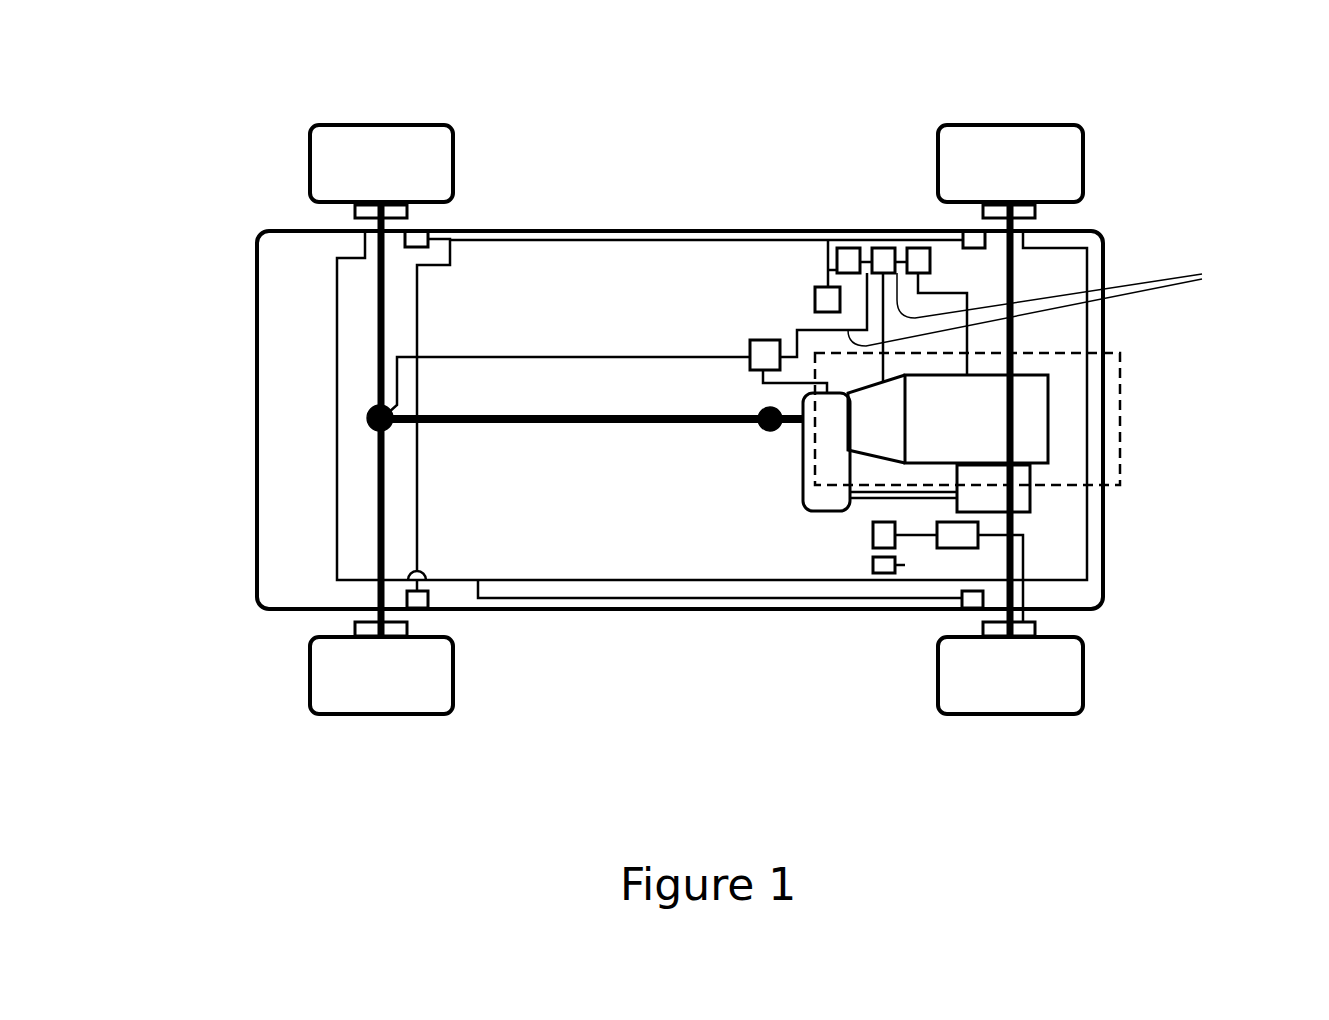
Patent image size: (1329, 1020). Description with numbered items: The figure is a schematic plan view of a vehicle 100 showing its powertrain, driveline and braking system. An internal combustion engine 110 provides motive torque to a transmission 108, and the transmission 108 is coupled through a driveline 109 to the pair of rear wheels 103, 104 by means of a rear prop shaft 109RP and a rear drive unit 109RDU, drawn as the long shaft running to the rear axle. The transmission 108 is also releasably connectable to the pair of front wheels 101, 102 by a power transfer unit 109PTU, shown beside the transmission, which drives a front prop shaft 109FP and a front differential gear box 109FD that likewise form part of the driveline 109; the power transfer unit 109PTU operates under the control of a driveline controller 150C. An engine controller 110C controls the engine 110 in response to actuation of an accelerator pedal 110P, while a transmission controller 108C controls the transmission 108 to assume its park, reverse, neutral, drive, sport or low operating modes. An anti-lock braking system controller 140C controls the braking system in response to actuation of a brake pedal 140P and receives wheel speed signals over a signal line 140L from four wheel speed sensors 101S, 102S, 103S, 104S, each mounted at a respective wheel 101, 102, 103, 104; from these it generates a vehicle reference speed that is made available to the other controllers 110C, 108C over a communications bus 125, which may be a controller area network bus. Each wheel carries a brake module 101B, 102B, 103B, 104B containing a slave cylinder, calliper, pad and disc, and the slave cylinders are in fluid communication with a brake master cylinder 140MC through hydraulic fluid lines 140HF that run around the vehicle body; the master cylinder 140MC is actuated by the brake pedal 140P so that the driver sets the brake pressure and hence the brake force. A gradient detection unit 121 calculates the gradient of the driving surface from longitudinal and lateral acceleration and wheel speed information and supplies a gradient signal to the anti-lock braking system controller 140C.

The vehicle 100 is at (1202, 128).
The front wheel 101 is at (1068, 172).
The front wheel 102 is at (1068, 688).
The rear wheel 103 is at (320, 172).
The rear wheel 104 is at (315, 680).
The brake module 101B is at (1035, 210).
The brake module 102B is at (1035, 630).
The brake module 103B is at (355, 210).
The brake module 104B is at (355, 630).
The wheel speed sensor 101S is at (973, 240).
The wheel speed sensor 102S is at (973, 608).
The wheel speed sensor 103S is at (418, 239).
The wheel speed sensor 104S is at (428, 600).
The transmission 108 is at (862, 398).
The transmission controller 108C is at (883, 248).
The driveline 109 is at (316, 446).
The rear drive unit 109RDU is at (372, 410).
The rear prop shaft 109RP is at (625, 421).
The power transfer unit 109PTU is at (812, 505).
The front differential gear box 109FD is at (1030, 503).
The front prop shaft 109FP is at (928, 499).
The internal combustion engine 110 is at (1018, 412).
The engine controller 110C is at (920, 247).
The accelerator pedal 110P is at (883, 573).
The gradient detection unit 121 is at (822, 296).
The communications bus 125 is at (1049, 303).
The anti-lock braking system controller 140C is at (847, 250).
The signal line 140L is at (590, 241).
The hydraulic fluid lines 140HF is at (338, 503).
The brake master cylinder 140MC is at (962, 548).
The brake pedal 140P is at (873, 536).
The driveline controller 150C is at (758, 352).